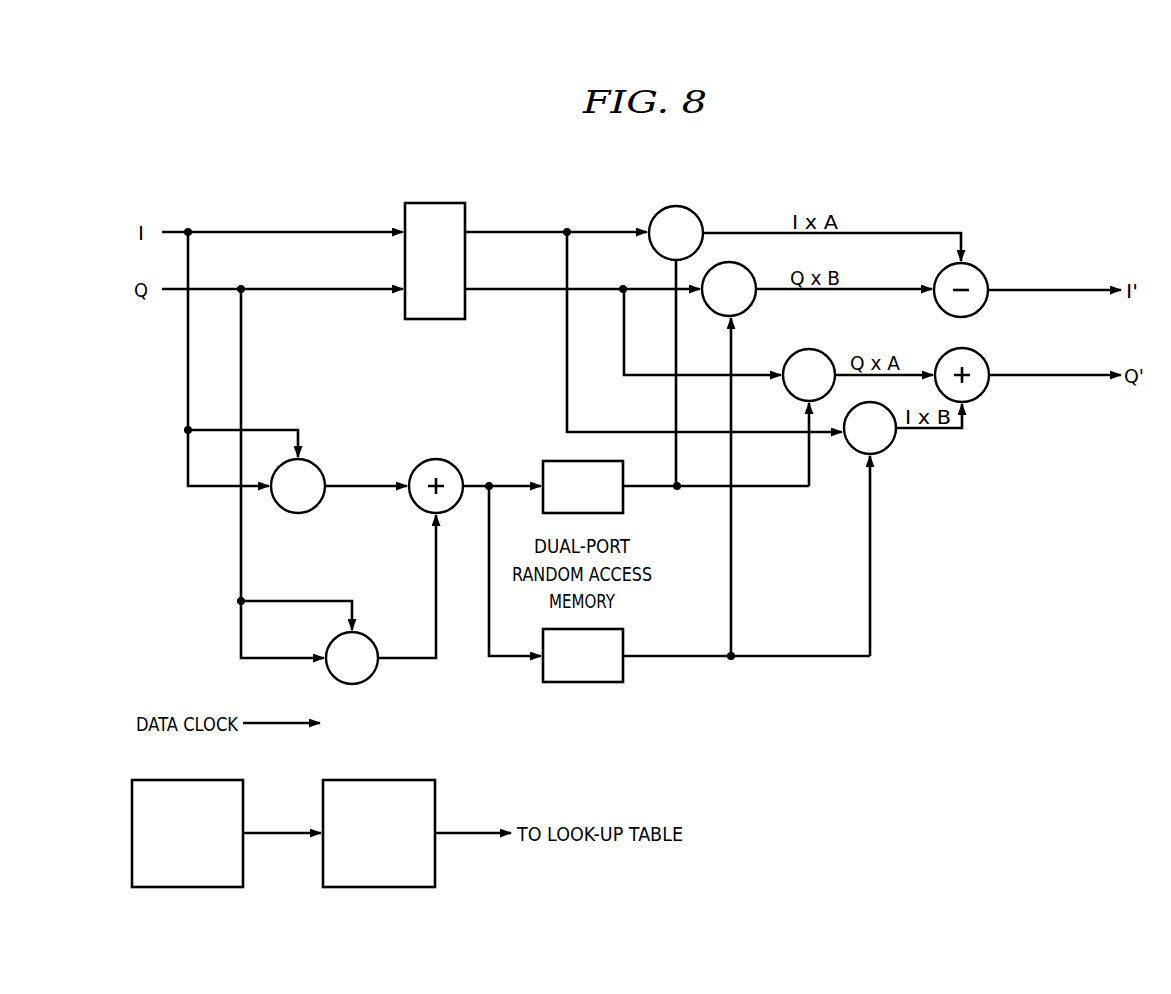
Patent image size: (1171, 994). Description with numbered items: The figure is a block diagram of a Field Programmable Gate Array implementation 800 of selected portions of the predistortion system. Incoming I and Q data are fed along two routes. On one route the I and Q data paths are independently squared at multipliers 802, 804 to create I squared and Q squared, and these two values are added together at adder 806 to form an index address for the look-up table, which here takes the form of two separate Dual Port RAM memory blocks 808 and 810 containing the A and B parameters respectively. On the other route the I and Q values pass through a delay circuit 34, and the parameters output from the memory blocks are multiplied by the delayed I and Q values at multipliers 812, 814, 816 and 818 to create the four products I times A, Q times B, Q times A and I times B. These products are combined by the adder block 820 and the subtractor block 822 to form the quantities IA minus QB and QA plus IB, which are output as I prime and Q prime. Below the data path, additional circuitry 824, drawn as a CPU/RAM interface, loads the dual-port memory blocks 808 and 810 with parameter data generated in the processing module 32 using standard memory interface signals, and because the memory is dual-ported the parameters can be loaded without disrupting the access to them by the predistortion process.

The Field Programmable Gate Array implementation 800 is at (960, 178).
The delay circuit 34 is at (437, 202).
The squaring multiplier 802 is at (316, 462).
The squaring multiplier 804 is at (370, 679).
The adder 806 is at (456, 462).
The Dual Port RAM memory block 808 is at (625, 500).
The Dual Port RAM memory block 810 is at (625, 640).
The multiplier 812 is at (678, 205).
The multiplier 814 is at (742, 267).
The multiplier 816 is at (813, 350).
The multiplier 818 is at (884, 452).
The adder block 820 is at (985, 397).
The subtractor block 822 is at (977, 268).
The processing module 32 is at (189, 779).
The additional circuitry 824 is at (380, 779).